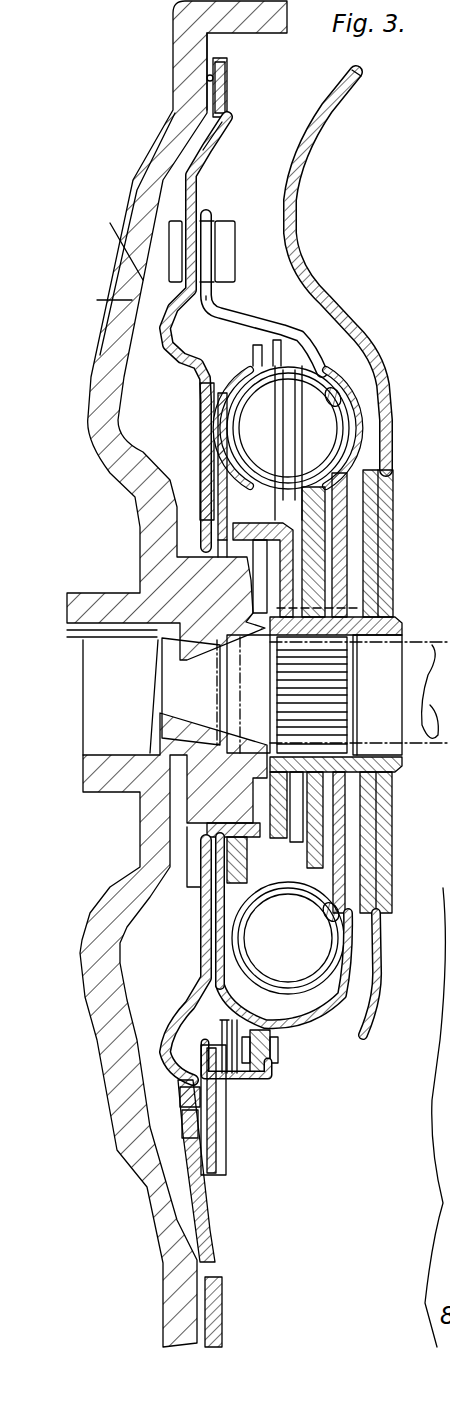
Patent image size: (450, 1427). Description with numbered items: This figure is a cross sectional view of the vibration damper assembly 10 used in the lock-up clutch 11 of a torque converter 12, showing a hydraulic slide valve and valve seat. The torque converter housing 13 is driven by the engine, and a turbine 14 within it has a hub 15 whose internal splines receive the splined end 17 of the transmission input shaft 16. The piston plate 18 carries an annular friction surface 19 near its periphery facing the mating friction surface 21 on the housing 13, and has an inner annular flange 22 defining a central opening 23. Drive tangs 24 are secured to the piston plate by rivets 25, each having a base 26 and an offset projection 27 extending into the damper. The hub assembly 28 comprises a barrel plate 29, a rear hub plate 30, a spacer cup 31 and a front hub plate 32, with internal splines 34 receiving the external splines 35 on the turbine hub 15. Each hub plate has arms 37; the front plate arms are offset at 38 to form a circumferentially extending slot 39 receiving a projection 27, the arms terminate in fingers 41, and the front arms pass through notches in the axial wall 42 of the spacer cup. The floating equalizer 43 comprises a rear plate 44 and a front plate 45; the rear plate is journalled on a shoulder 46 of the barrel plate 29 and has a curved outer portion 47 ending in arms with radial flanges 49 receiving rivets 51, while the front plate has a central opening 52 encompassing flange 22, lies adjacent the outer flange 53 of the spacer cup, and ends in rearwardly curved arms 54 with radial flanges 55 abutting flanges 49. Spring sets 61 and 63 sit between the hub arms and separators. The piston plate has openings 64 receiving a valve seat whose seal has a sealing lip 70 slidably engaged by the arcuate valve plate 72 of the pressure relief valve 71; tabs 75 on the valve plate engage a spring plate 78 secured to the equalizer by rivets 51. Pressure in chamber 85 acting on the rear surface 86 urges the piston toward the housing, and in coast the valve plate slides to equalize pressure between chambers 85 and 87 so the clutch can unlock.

The vibration damper assembly 10 is at (148, 405).
The lock-up clutch 11 is at (258, 99).
The torque converter 12 is at (152, 137).
The housing 13 is at (130, 296).
The turbine 14 is at (385, 360).
The hub 15 is at (370, 625).
The transmission input shaft 16 is at (440, 636).
The splined end 17 is at (250, 680).
The piston plate 18 is at (200, 195).
The annular friction surface 19 is at (228, 100).
The mating friction surface 21 is at (207, 78).
The inner annular flange 22 is at (222, 548).
The central opening 23 is at (205, 835).
The drive tangs 24 is at (266, 300).
The rivets 25 is at (235, 243).
The base 26 is at (218, 222).
The offset projection 27 is at (290, 420).
The hub assembly 28 is at (355, 825).
The barrel plate 29 is at (348, 805).
The rear hub plate 30 is at (370, 505).
The spacer cup 31 is at (285, 845).
The front hub plate 32 is at (250, 590).
The internal splines 34 is at (247, 800).
The external splines 35 is at (350, 655).
The arms 37 is at (240, 440).
The offset 38 is at (230, 445).
The circumferentially extending slot 39 is at (277, 407).
The circumferentially extending fingers 41 is at (305, 360).
The axial wall 42 is at (258, 568).
The floating equalizer 43 is at (326, 1035).
The rear plate 44 is at (385, 898).
The front plate 45 is at (215, 895).
The shoulder 46 is at (365, 555).
The curved outer portion 47 is at (350, 940).
The radial flanges 49 is at (262, 1082).
The rivets 51 is at (279, 1047).
The central opening 52 is at (245, 895).
The outer flange 53 is at (232, 523).
The rearwardly curved arms 54 is at (193, 983).
The radial flanges 55 is at (250, 1085).
The spring set 61 is at (375, 393).
The spring set 63 is at (340, 965).
The openings 64 is at (185, 1148).
The sealing lip 70 is at (217, 1133).
The pressure relief valve 71 is at (240, 1161).
The valve plate 72 is at (203, 1098).
The tabs 75 is at (445, 1205).
The spring plate 78 is at (200, 1117).
The chamber 85 is at (300, 150).
The rear surface 86 is at (215, 180).
The chamber 87 is at (143, 280).